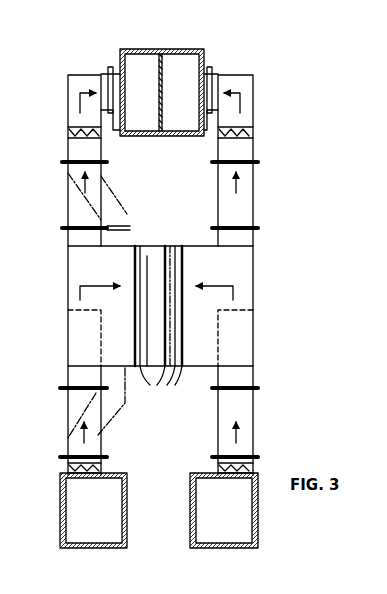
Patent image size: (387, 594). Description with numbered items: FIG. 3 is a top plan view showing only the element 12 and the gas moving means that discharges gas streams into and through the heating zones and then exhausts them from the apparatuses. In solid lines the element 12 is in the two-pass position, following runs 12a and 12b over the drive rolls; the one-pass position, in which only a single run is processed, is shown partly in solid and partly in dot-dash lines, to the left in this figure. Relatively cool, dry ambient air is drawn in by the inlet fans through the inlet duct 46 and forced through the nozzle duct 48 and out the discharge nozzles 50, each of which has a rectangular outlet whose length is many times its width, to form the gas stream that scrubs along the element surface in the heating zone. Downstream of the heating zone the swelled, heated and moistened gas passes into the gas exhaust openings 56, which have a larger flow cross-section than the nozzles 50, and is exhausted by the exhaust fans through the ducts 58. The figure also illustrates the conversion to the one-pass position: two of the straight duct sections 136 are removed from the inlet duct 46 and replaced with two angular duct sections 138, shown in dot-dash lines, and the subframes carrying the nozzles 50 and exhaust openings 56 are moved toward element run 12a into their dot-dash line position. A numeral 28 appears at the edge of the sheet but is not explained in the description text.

The element 12 is at (178, 286).
The element run 12a is at (175, 264).
The element run 12b is at (147, 264).
The furnace 28 is at (381, 203).
The inlet duct 46 is at (190, 518).
The nozzle duct 48 is at (122, 337).
The discharge nozzle 50 is at (158, 386).
The gas exhaust opening 56 is at (158, 386).
The duct 58 is at (187, 62).
The straight duct section 136 is at (68, 208).
The angular duct section 138 is at (118, 197).